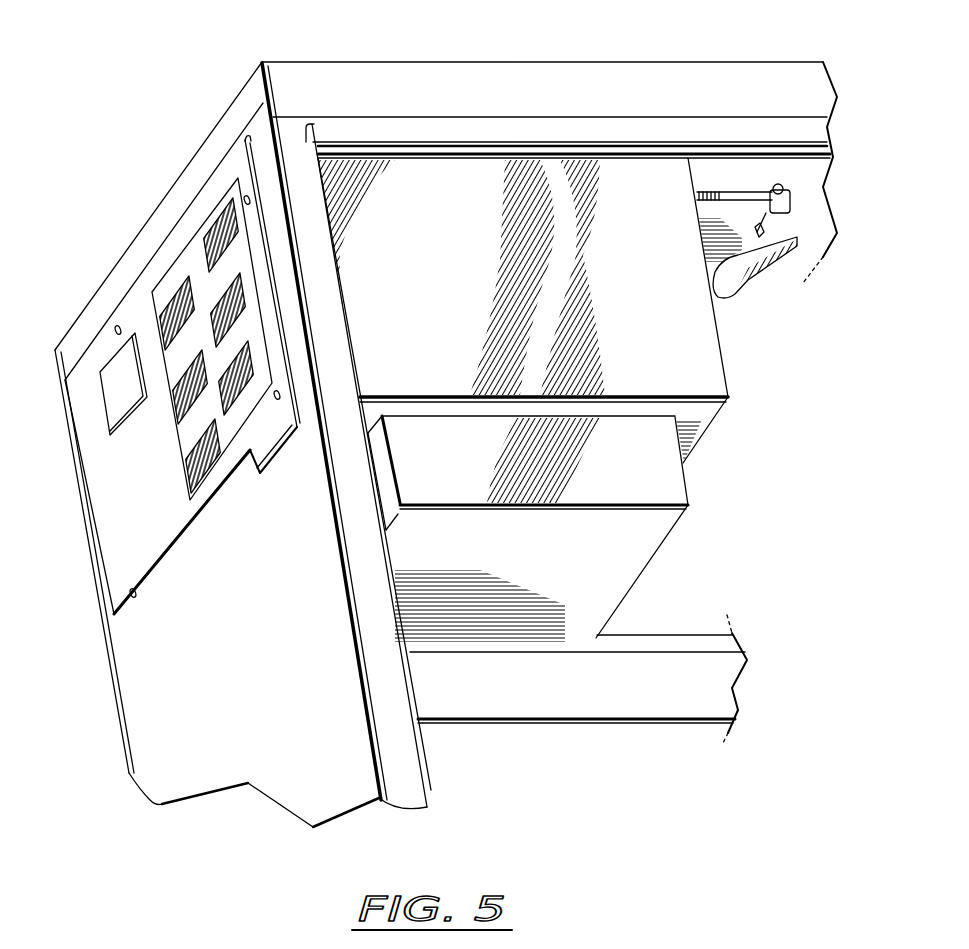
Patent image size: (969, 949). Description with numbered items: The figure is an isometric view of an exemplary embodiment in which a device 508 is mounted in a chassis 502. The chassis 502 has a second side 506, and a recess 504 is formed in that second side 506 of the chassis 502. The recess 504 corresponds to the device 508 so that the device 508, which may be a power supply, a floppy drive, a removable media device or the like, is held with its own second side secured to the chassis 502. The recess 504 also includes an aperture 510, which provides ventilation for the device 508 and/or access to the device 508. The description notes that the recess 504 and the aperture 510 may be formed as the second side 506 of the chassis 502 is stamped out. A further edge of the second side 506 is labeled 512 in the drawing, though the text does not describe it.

The chassis 502 is at (438, 54).
The recess 504 is at (185, 237).
The second side of the chassis 506 is at (152, 726).
The device 508 is at (445, 295).
The aperture 510 is at (125, 531).
The panel edge 512 is at (107, 575).